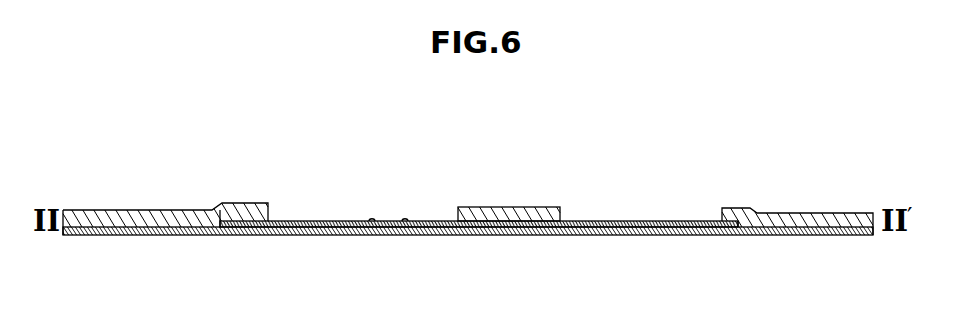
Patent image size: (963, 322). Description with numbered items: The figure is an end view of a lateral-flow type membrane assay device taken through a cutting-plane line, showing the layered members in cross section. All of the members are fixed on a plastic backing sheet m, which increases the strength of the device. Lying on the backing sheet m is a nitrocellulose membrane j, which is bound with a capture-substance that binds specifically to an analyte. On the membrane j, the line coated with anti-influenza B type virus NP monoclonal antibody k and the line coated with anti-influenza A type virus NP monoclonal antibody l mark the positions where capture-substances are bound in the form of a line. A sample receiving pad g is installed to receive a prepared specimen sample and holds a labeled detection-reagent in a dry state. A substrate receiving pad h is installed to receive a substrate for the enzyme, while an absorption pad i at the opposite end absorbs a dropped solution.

The sample receiving pad g is at (500, 207).
The substrate receiving pad h is at (805, 213).
The absorption pad i is at (198, 211).
The nitrocellulose membrane j is at (598, 221).
The line coated with anti-influenza B type virus NP monoclonal antibody k is at (372, 219).
The line coated with anti-influenza A type virus NP monoclonal antibody l is at (405, 219).
The backing sheet m is at (540, 235).